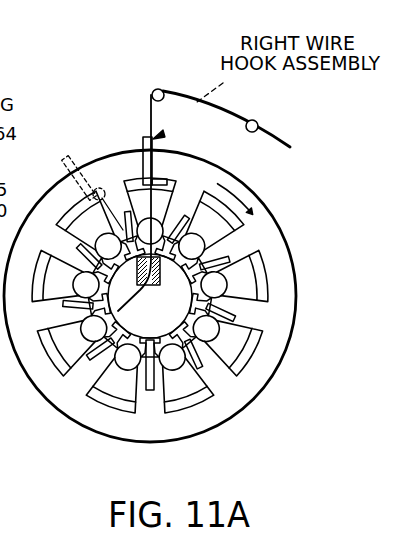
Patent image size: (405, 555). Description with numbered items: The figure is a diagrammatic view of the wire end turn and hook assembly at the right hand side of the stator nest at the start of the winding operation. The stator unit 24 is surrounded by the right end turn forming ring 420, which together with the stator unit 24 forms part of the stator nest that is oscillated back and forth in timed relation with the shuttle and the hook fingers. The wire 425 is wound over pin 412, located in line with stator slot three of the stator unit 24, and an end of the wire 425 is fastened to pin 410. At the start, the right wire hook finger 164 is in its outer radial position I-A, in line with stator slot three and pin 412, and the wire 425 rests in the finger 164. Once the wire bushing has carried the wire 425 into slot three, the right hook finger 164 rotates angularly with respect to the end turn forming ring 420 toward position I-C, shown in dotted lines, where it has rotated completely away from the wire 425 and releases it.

The stator unit 24 is at (220, 233).
The right wire hook finger 164 is at (66, 160).
The pin 410 is at (258, 122).
The pin 412 is at (163, 90).
The right end turn forming ring 420 is at (243, 413).
The wire 425 is at (148, 110).
The outer radial position I-A is at (156, 157).
The release position I-C is at (82, 152).